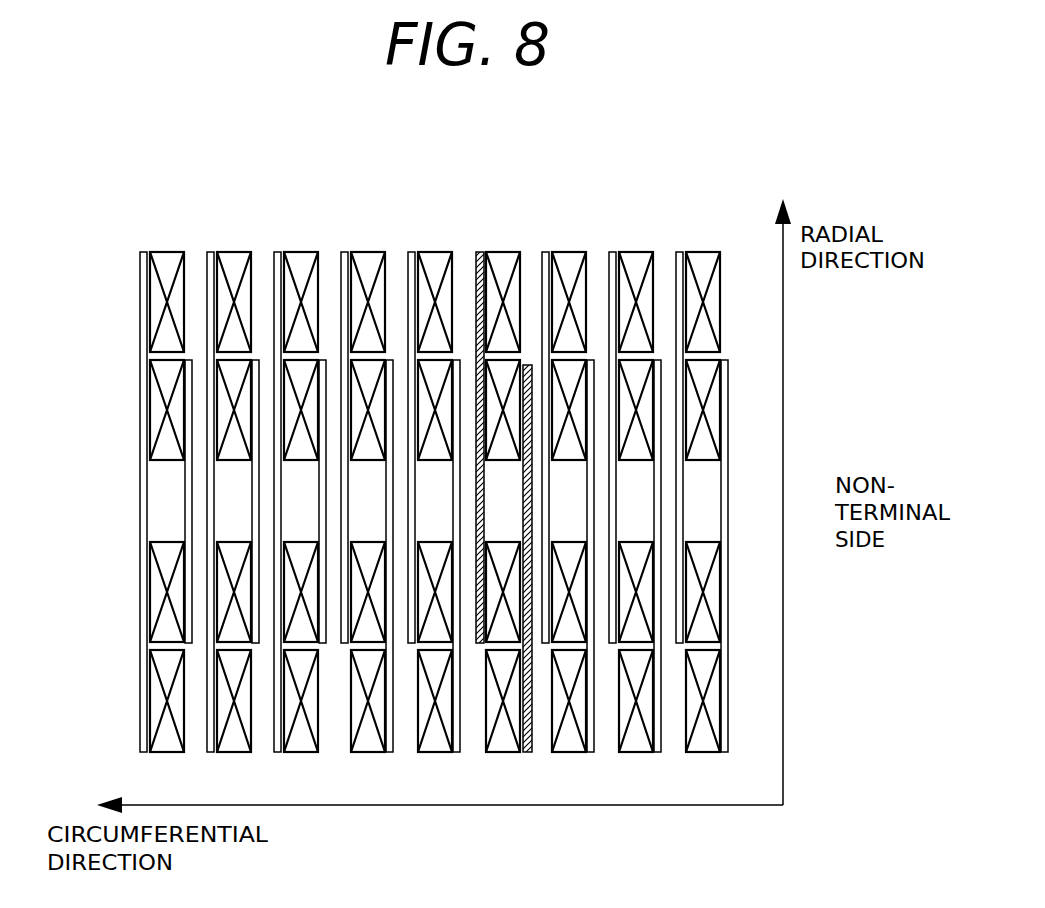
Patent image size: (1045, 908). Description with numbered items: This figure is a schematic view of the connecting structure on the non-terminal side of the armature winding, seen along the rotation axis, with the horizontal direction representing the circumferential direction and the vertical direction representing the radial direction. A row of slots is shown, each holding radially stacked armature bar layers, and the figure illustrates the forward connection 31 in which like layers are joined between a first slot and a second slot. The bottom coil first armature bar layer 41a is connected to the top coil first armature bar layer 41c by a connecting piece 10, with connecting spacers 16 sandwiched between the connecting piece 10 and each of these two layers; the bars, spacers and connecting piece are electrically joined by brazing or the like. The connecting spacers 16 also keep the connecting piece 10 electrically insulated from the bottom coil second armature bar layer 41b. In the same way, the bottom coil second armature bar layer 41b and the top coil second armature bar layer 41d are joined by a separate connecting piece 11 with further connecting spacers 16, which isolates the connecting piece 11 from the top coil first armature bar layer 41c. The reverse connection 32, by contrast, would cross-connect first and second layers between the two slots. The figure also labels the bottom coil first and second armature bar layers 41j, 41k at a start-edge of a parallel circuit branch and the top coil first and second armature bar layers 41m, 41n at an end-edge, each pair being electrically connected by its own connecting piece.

The connecting piece 10 is at (444, 407).
The connecting piece 11 is at (530, 727).
The connecting spacer 16 is at (479, 278).
The forward connection 31 is at (503, 499).
The reverse connection 32 is at (117, 438).
The bottom coil first armature bar layer 41a is at (505, 265).
The bottom coil second armature bar layer 41b is at (505, 368).
The top coil first armature bar layer 41c is at (502, 633).
The top coil second armature bar layer 41d is at (503, 742).
The bottom coil first armature bar layer 41j is at (716, 320).
The bottom coil second armature bar layer 41k is at (713, 413).
The top coil first armature bar layer 41m is at (157, 595).
The top coil second armature bar layer 41n is at (157, 705).